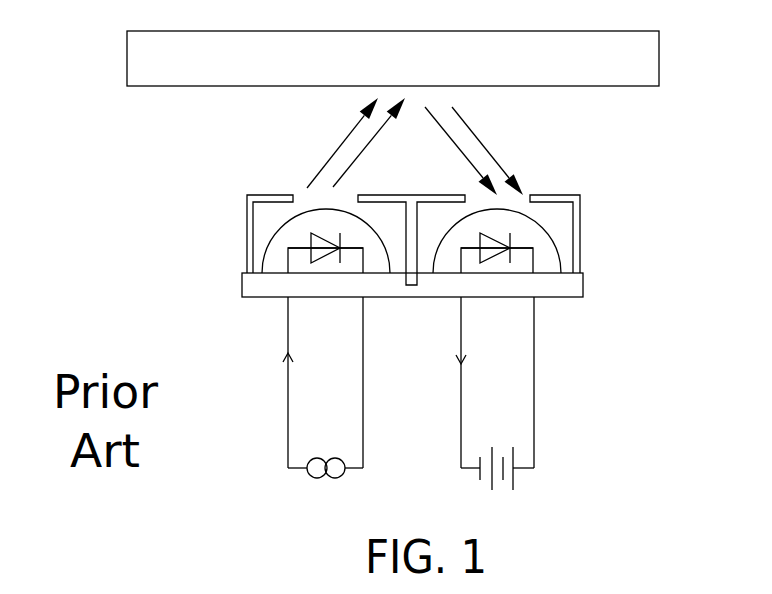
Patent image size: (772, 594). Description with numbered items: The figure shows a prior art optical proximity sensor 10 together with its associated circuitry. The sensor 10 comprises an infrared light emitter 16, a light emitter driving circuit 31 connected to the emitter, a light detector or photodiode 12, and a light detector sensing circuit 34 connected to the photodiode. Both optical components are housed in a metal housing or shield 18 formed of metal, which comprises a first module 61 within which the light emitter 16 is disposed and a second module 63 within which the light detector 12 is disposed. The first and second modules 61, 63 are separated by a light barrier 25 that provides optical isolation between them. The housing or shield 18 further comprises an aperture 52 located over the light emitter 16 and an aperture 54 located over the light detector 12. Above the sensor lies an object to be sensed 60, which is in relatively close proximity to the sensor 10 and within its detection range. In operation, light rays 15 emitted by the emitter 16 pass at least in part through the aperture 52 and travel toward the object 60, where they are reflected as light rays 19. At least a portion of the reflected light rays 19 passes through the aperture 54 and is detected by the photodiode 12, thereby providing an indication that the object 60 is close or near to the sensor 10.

The optical proximity sensor 10 is at (110, 190).
The photodiode 12 is at (526, 247).
The light rays 15 is at (366, 144).
The infrared light emitter 16 is at (300, 247).
The metal housing or shield 18 is at (386, 241).
The light rays 19 is at (463, 153).
The light barrier 25 is at (408, 285).
The light emitter driving circuit 31 is at (288, 418).
The light detector sensing circuit 34 is at (534, 383).
The aperture 52 is at (302, 195).
The aperture 54 is at (525, 200).
The object to be sensed 60 is at (659, 57).
The first module 61 is at (262, 195).
The second module 63 is at (577, 195).